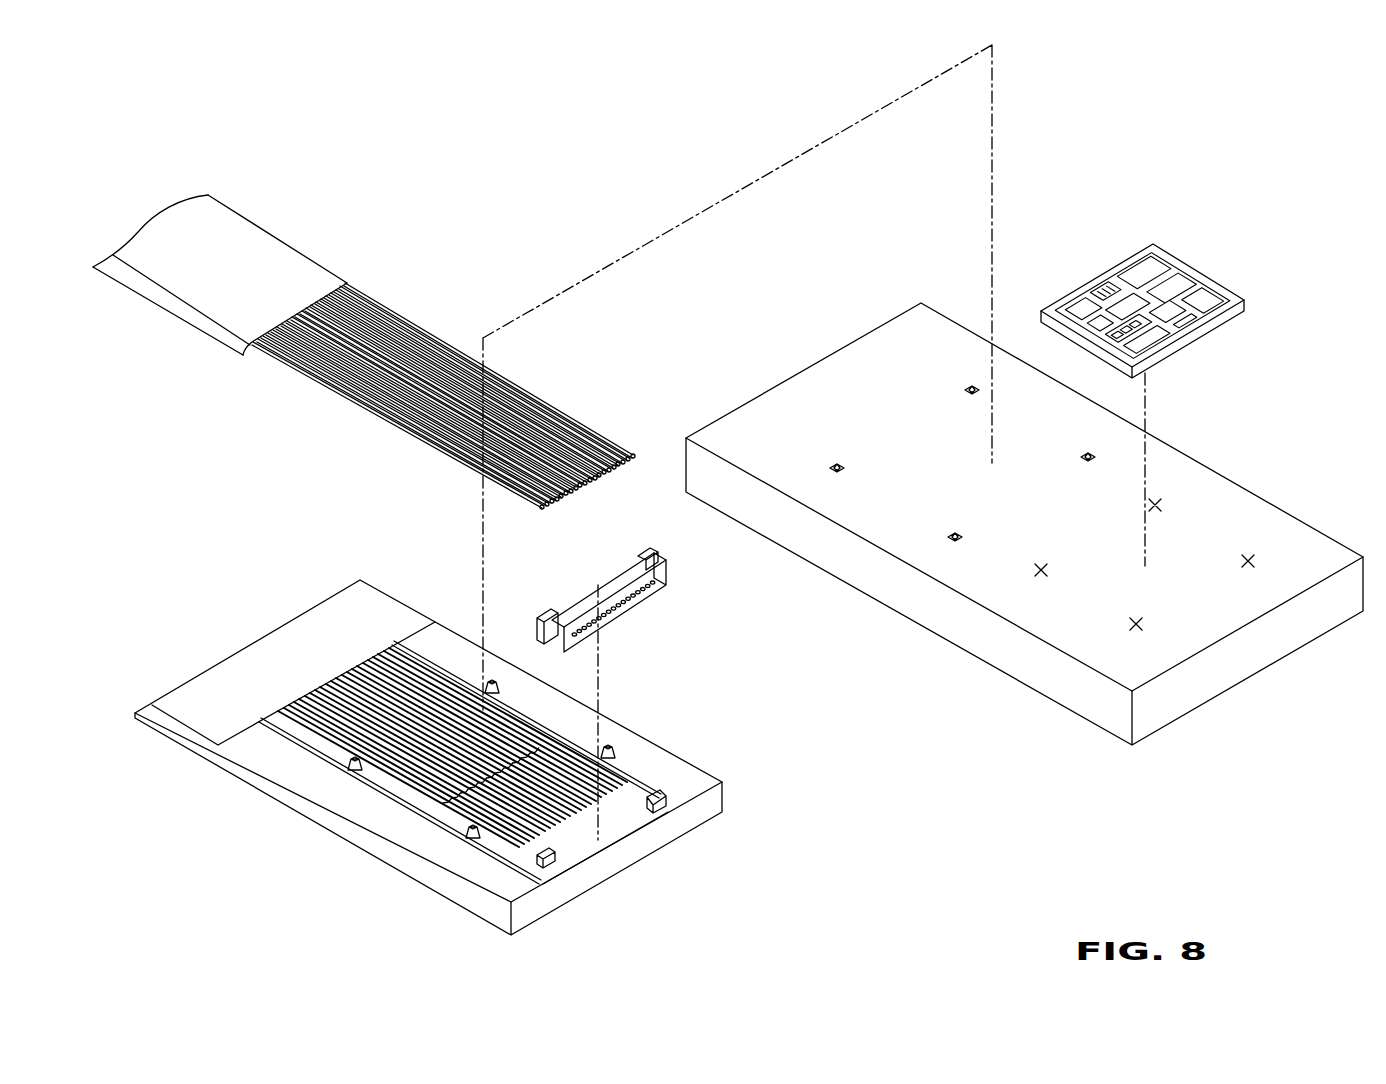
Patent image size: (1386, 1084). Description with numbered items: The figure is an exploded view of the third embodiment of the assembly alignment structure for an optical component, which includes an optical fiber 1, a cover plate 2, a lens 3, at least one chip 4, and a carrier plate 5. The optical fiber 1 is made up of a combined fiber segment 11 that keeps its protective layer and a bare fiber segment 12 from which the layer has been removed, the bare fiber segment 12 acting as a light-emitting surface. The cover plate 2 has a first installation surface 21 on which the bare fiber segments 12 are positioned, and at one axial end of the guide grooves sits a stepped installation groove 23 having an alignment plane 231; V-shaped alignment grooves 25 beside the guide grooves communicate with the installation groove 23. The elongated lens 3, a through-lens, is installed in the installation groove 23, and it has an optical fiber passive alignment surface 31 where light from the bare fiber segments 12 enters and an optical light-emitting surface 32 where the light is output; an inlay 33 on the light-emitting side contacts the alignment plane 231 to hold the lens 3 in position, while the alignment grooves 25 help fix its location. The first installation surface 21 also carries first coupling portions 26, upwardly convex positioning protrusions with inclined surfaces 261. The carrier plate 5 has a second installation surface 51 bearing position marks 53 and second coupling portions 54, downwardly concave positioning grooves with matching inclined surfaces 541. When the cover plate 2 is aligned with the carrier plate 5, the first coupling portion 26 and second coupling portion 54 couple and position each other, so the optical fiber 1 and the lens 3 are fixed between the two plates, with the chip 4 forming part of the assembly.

The optical fiber 1 is at (364, 345).
The combined fiber segment 11 is at (262, 262).
The bare fiber segment 12 is at (443, 385).
The cover plate 2 is at (448, 720).
The first installation surface 21 is at (457, 640).
The installation groove 23 is at (617, 827).
The alignment plane 231 is at (657, 817).
The alignment groove 25 is at (507, 837).
The first coupling portion 26 is at (350, 760).
The inclined surface 261 is at (360, 766).
The lens 3 is at (610, 568).
The optical fiber passive alignment surface 31 is at (587, 594).
The optical light-emitting surface 32 is at (670, 577).
The inlay 33 is at (535, 616).
The chip 4 is at (1155, 250).
The carrier plate 5 is at (1033, 509).
The second installation surface 51 is at (1276, 521).
The position mark 53 is at (1157, 504).
The second coupling portion 54 is at (972, 388).
The inclined surface 541 is at (837, 466).